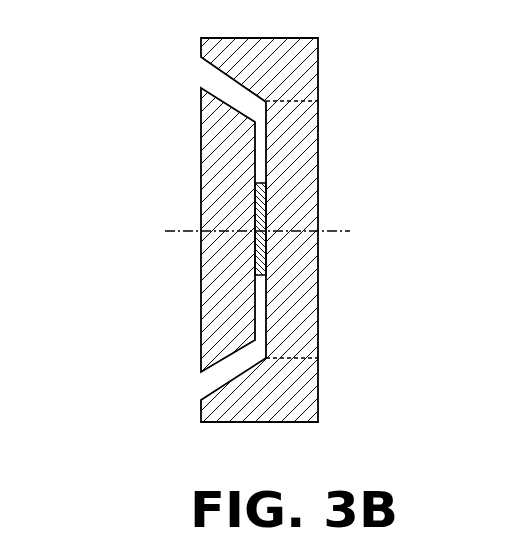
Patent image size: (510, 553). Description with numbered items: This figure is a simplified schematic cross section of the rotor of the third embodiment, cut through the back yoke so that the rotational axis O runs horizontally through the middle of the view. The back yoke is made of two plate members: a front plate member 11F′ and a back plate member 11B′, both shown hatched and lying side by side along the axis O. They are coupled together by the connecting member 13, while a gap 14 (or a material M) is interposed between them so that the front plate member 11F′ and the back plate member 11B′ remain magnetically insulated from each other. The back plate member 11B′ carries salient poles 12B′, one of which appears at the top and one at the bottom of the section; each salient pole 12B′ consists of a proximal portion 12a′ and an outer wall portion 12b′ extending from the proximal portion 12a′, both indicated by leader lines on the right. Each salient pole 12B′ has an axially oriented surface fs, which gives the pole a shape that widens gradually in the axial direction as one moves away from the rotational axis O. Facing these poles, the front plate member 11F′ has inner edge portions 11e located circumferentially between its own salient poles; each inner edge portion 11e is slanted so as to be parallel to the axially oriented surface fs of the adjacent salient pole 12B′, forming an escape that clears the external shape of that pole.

The back plate member 11B′ is at (300, 161).
The front plate member 11F′ is at (201, 165).
The inner edge portion 11e is at (227, 93).
The proximal portion 12a′ is at (297, 85).
The outer wall portion 12b′ is at (297, 45).
The salient pole 12B′ is at (407, 35).
The connecting member 13 is at (263, 254).
The gap 14 is at (264, 132).
The axially oriented surface fs is at (212, 75).
The rotational axis O is at (257, 232).